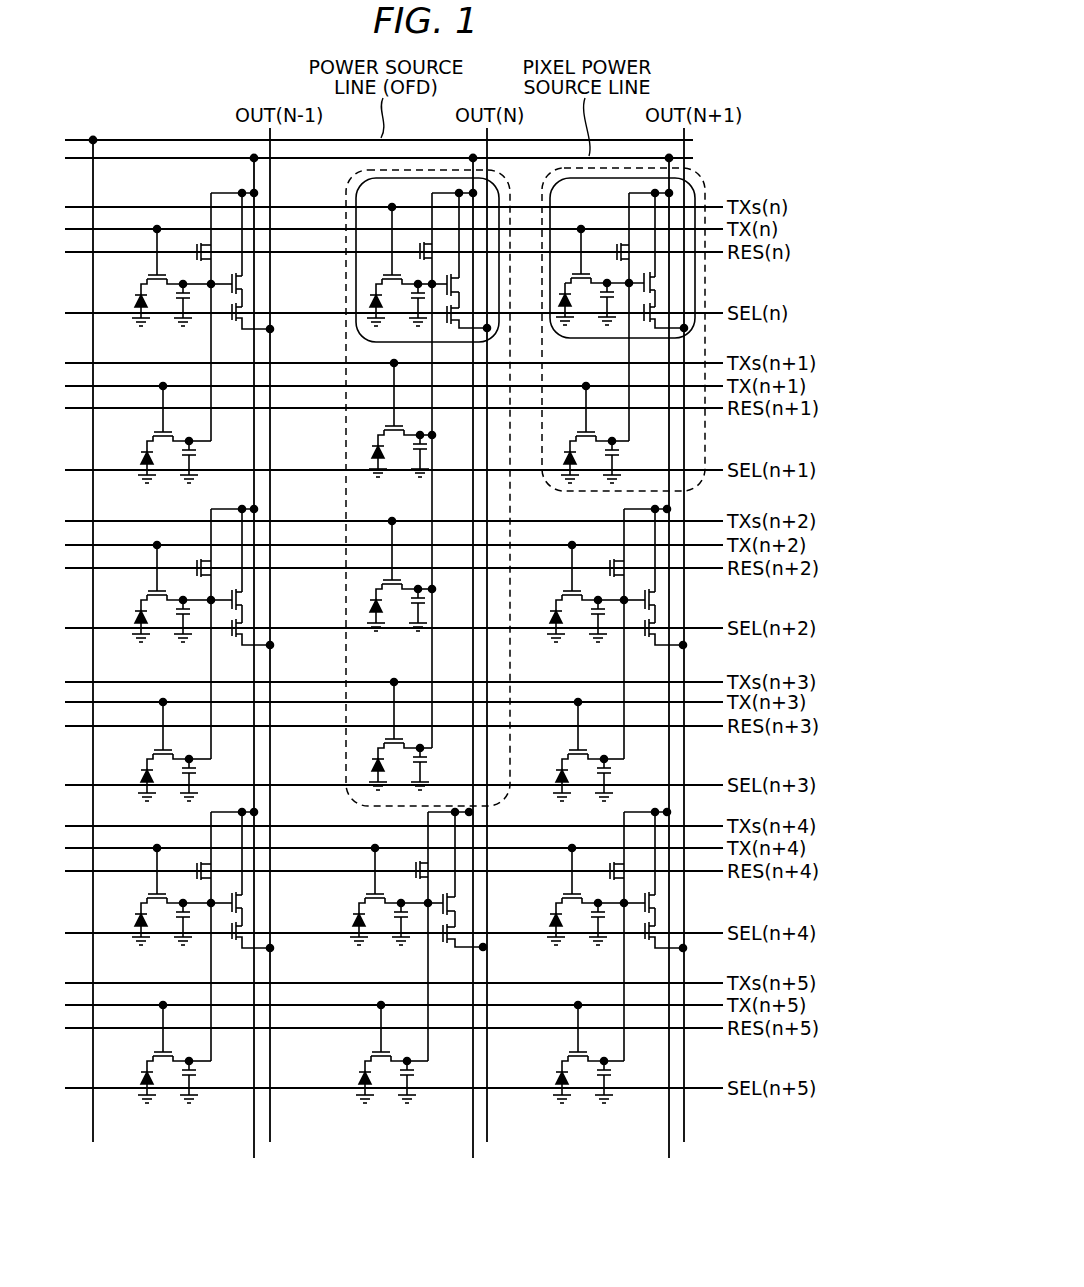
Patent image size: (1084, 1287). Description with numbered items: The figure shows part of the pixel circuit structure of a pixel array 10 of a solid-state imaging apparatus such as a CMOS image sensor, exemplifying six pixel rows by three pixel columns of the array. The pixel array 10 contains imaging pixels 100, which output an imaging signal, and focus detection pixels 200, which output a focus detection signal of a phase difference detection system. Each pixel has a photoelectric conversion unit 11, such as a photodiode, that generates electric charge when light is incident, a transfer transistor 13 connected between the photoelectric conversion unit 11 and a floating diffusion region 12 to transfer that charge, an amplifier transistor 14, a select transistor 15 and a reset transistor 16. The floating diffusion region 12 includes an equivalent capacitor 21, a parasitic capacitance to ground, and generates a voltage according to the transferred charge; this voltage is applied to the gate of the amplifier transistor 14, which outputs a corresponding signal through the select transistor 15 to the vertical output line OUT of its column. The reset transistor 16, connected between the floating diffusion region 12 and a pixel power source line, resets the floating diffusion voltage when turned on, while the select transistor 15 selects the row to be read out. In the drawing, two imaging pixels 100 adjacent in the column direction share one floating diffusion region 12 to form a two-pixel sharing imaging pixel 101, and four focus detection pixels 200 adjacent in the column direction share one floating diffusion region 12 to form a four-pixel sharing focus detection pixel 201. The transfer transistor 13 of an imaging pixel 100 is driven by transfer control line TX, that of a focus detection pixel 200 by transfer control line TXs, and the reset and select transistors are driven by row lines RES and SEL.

The pixel array 10 is at (104, 122).
The photoelectric conversion unit 11 is at (561, 298).
The floating diffusion region 12 is at (627, 281).
The transfer transistor 13 is at (573, 272).
The amplifier transistor 14 is at (660, 282).
The select transistor 15 is at (645, 318).
The reset transistor 16 is at (619, 246).
The equivalent capacitor 21 is at (598, 302).
The imaging pixel 100 is at (697, 185).
The two-pixel sharing imaging pixel 101 is at (706, 440).
The focus detection pixel 200 is at (354, 187).
The four-pixel sharing focus detection pixel 201 is at (346, 284).